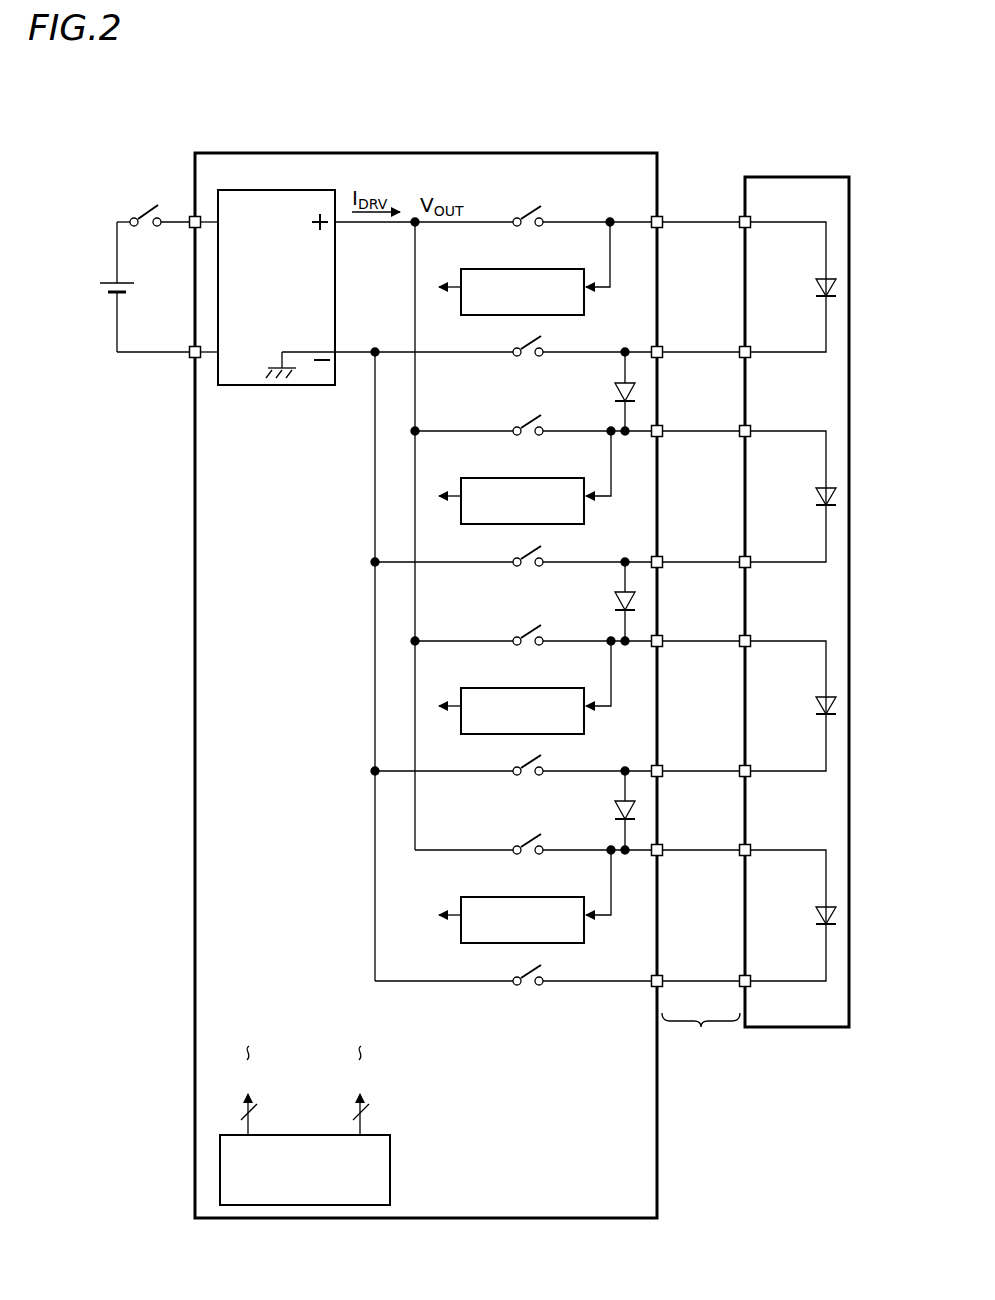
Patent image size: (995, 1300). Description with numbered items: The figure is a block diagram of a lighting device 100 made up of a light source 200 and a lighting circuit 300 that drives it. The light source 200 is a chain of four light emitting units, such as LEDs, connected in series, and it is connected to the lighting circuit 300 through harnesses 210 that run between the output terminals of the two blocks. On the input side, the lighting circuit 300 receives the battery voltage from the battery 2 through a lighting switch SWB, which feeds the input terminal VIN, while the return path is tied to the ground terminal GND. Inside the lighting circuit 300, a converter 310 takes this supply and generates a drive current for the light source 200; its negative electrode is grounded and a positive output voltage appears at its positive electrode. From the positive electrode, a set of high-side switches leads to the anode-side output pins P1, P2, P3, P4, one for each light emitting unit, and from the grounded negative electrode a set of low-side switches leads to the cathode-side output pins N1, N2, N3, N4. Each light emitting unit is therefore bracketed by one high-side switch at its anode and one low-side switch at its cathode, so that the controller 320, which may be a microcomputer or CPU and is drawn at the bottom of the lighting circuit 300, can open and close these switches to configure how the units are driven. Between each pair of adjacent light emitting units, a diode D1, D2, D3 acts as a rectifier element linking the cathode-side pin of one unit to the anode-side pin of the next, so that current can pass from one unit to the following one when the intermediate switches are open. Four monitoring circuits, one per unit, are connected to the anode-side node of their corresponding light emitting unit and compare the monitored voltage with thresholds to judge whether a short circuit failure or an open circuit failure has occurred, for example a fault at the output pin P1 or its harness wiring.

The lighting device 100 is at (720, 97).
The battery 2 is at (96, 291).
The light source 200 is at (782, 177).
The harnesses 210 is at (701, 1035).
The lighting circuit 300 is at (438, 153).
The converter 310 is at (254, 190).
The controller 320 is at (392, 1158).
The diode D1 is at (613, 390).
The diode D2 is at (613, 598).
The diode D3 is at (613, 807).
The lighting switch SWB is at (138, 208).
The input terminal VIN is at (190, 212).
The ground terminal GND is at (190, 360).
The output pin P1 is at (664, 220).
The positive terminal 2 P2 is at (664, 429).
The positive terminal 3 P3 is at (664, 639).
The positive terminal 4 P4 is at (664, 848).
The negative terminal 1 N1 is at (664, 350).
The negative terminal 2 N2 is at (664, 560).
The negative terminal 3 N3 is at (664, 769).
The negative terminal 4 N4 is at (664, 979).